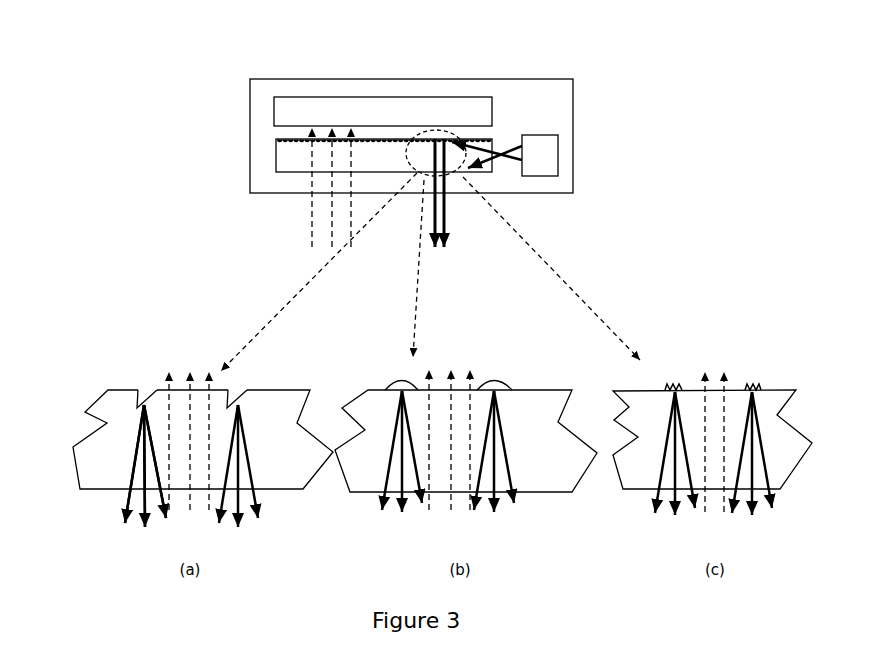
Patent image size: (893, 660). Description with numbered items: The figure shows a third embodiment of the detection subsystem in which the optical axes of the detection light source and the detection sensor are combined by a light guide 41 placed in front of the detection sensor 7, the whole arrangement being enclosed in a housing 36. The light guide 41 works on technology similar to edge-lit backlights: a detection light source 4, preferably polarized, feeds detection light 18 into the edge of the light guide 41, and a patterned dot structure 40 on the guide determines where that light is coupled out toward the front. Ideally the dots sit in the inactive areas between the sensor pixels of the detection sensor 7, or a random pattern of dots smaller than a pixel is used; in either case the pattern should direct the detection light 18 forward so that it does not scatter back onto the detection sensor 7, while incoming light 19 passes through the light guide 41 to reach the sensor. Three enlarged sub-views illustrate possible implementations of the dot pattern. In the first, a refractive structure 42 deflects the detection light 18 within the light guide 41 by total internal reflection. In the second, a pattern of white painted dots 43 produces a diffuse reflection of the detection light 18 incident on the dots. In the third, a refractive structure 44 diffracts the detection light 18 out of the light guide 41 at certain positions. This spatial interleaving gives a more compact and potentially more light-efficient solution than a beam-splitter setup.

The detection light source 4 is at (558, 156).
The detection sensor 7 is at (395, 97).
The detection light 18 is at (445, 210).
The incoming light 19 is at (312, 211).
The housing 36 is at (573, 193).
The patterned dot structure 40 is at (403, 141).
The light guide 41 is at (276, 152).
The refractive structure 42 is at (148, 393).
The white painted dots 43 is at (497, 390).
The refractive structure 44 is at (753, 392).